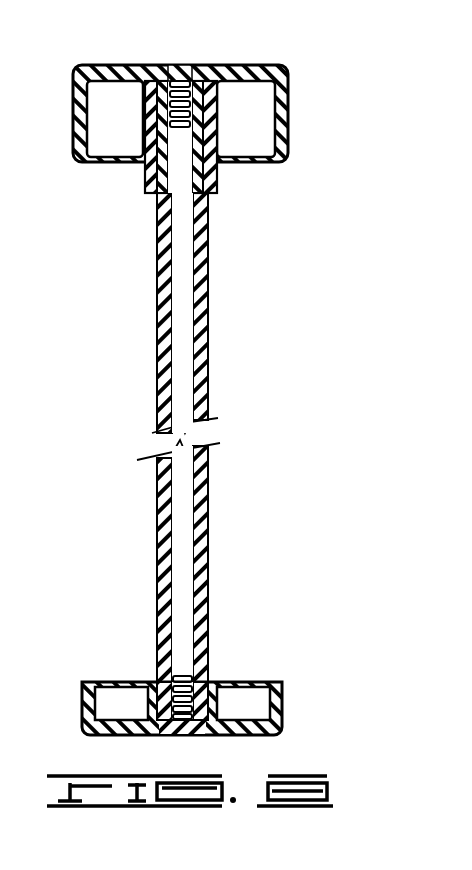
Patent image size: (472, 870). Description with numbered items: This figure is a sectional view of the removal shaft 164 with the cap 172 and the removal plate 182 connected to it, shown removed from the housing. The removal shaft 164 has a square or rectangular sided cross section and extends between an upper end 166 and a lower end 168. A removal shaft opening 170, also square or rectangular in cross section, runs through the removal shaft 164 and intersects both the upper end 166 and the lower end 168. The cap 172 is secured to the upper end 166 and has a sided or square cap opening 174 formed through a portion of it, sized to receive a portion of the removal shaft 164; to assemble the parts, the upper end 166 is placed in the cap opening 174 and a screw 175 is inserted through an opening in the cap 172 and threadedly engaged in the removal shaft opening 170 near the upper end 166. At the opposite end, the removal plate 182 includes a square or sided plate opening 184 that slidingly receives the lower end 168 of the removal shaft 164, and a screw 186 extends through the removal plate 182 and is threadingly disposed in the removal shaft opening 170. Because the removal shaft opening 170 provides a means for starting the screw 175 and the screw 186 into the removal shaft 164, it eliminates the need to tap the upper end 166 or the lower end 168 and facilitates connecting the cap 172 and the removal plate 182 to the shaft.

The removal shaft 164 is at (200, 254).
The upper end 166 is at (196, 80).
The lower end 168 is at (155, 733).
The removal shaft opening 170 is at (190, 320).
The cap 172 is at (288, 108).
The cap opening 174 is at (160, 152).
The screw 175 is at (178, 66).
The removal plate 182 is at (278, 732).
The plate opening 184 is at (203, 686).
The screw 186 is at (182, 728).